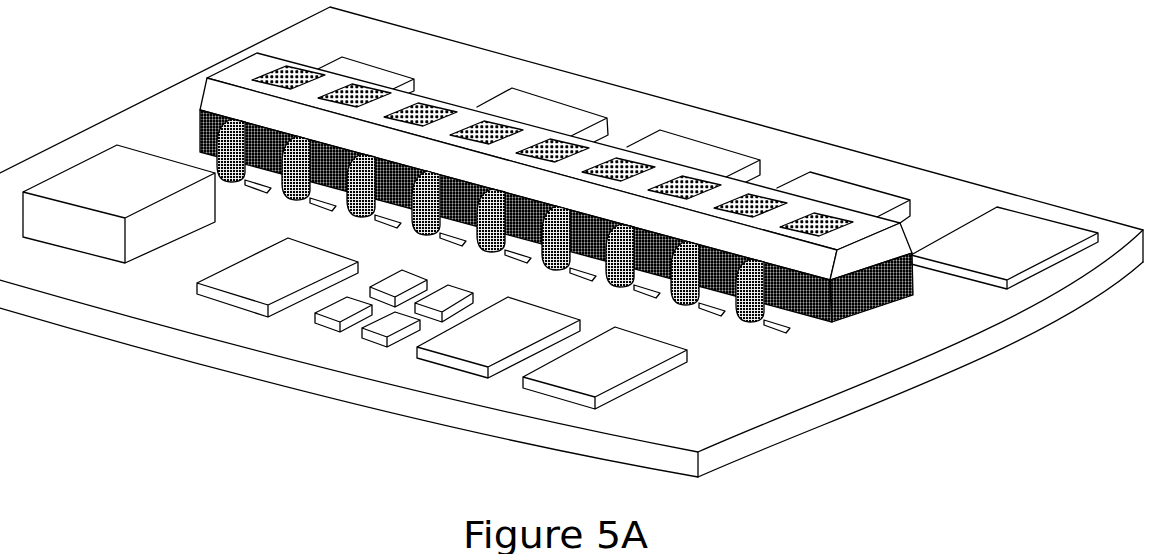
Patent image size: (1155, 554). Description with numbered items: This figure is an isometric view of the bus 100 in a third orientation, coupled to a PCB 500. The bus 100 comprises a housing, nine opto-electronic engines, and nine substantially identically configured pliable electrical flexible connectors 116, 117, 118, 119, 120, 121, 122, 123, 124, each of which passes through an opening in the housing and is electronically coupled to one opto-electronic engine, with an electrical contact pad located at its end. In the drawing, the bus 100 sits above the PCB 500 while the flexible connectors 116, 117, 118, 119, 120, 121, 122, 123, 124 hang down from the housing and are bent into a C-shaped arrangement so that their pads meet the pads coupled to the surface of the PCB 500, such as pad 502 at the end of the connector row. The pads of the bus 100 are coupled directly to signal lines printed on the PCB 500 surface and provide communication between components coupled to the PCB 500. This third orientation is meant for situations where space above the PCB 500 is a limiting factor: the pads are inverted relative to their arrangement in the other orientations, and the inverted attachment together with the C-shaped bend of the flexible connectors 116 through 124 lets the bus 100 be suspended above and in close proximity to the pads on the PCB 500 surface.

The bus 100 is at (453, 100).
The flexible connector 116 is at (231, 182).
The flexible connector 117 is at (296, 200).
The flexible connector 118 is at (361, 217).
The flexible connector 119 is at (426, 235).
The flexible connector 120 is at (491, 252).
The flexible connector 121 is at (556, 270).
The flexible connector 122 is at (620, 287).
The flexible connector 123 is at (685, 305).
The flexible connector 124 is at (750, 322).
The PCB 500 is at (947, 193).
The contact pad 502 is at (772, 328).